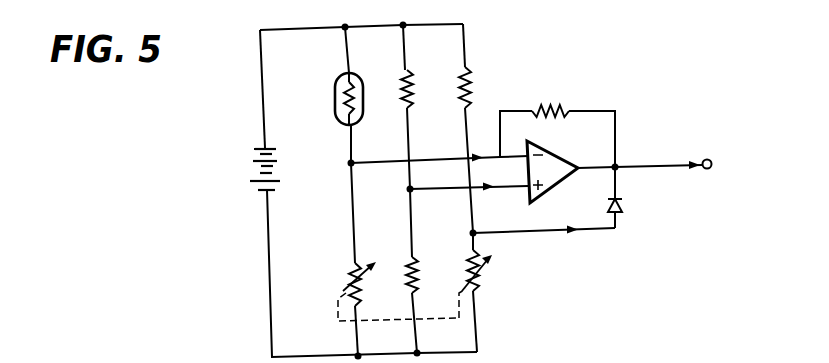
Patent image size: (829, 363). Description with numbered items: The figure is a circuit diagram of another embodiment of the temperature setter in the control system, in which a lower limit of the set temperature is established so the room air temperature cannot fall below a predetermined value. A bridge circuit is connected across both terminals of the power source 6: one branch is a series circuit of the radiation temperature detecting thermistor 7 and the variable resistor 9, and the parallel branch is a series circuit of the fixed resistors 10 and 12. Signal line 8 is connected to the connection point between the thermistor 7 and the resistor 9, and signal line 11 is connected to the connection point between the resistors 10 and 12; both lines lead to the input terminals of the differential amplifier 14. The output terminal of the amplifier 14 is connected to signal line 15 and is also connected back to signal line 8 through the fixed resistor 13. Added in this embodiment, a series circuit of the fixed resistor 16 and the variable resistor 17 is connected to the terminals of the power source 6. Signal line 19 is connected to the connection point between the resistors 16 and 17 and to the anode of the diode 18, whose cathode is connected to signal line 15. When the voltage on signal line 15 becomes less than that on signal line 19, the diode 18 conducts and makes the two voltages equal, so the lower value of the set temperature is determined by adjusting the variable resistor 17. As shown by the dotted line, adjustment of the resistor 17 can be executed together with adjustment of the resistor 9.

The power source 6 is at (252, 169).
The radiation temperature detecting thermistor 7 is at (335, 92).
The signal line 8 is at (431, 158).
The variable resistor 9 is at (349, 278).
The fixed resistor 10 is at (419, 80).
The signal line 11 is at (445, 190).
The fixed resistor 12 is at (405, 276).
The fixed resistor 13 is at (548, 105).
The differential amplifier 14 is at (551, 189).
The signal line 15 is at (655, 167).
The fixed resistor 16 is at (471, 82).
The variable resistor 17 is at (467, 273).
The diode 18 is at (621, 206).
The signal line 19 is at (535, 236).